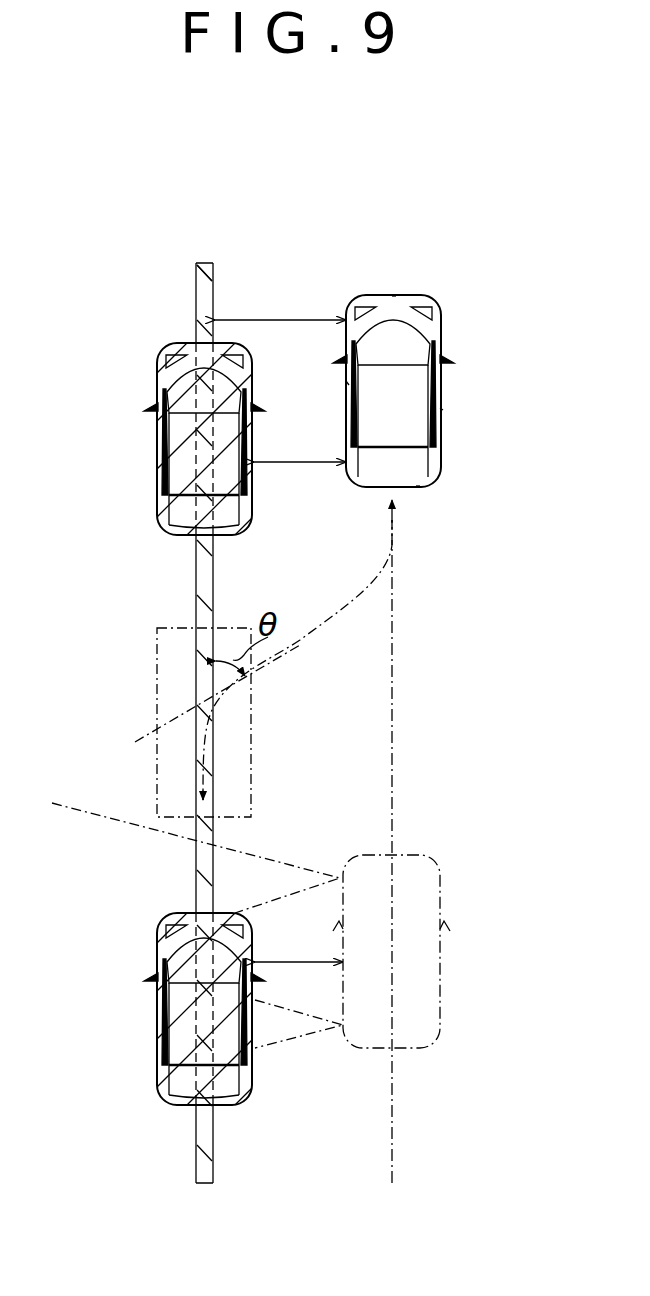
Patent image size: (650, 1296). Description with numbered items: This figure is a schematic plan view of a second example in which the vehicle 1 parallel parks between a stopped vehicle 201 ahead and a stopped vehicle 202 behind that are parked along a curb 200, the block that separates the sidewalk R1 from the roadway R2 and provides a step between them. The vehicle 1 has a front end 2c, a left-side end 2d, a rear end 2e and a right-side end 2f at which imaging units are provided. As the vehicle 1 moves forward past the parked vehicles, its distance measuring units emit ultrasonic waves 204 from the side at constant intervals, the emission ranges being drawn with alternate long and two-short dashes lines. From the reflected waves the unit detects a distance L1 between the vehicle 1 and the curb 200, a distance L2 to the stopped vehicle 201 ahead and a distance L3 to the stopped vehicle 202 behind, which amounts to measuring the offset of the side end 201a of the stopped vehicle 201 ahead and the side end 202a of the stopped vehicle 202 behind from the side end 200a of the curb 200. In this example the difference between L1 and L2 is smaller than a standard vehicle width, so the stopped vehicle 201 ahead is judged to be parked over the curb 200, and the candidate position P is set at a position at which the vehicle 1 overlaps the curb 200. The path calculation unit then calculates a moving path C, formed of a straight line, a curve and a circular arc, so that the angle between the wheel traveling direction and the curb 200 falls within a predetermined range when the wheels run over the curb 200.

The vehicle 1 is at (444, 331).
The front end 2c is at (402, 295).
The left-side end 2d is at (345, 383).
The rear end 2e is at (419, 489).
The right-side end 2f is at (440, 408).
The curb 200 is at (196, 299).
The side end of the curb 200a is at (213, 289).
The stopped vehicle ahead 201 is at (184, 398).
The side end of the stopped vehicle ahead 201a is at (252, 503).
The stopped vehicle behind 202 is at (180, 1023).
The side end of the stopped vehicle behind 202a is at (255, 1082).
The ultrasonic waves 204 is at (304, 866).
The candidate position P is at (157, 666).
The moving path C is at (300, 645).
The sidewalk R1 is at (158, 582).
The roadway R2 is at (424, 560).
The distance between the vehicle and the curb L1 is at (279, 306).
The distance between the vehicle and the stopped vehicle ahead L2 is at (299, 450).
The distance between the vehicle and the stopped vehicle behind L3 is at (298, 948).